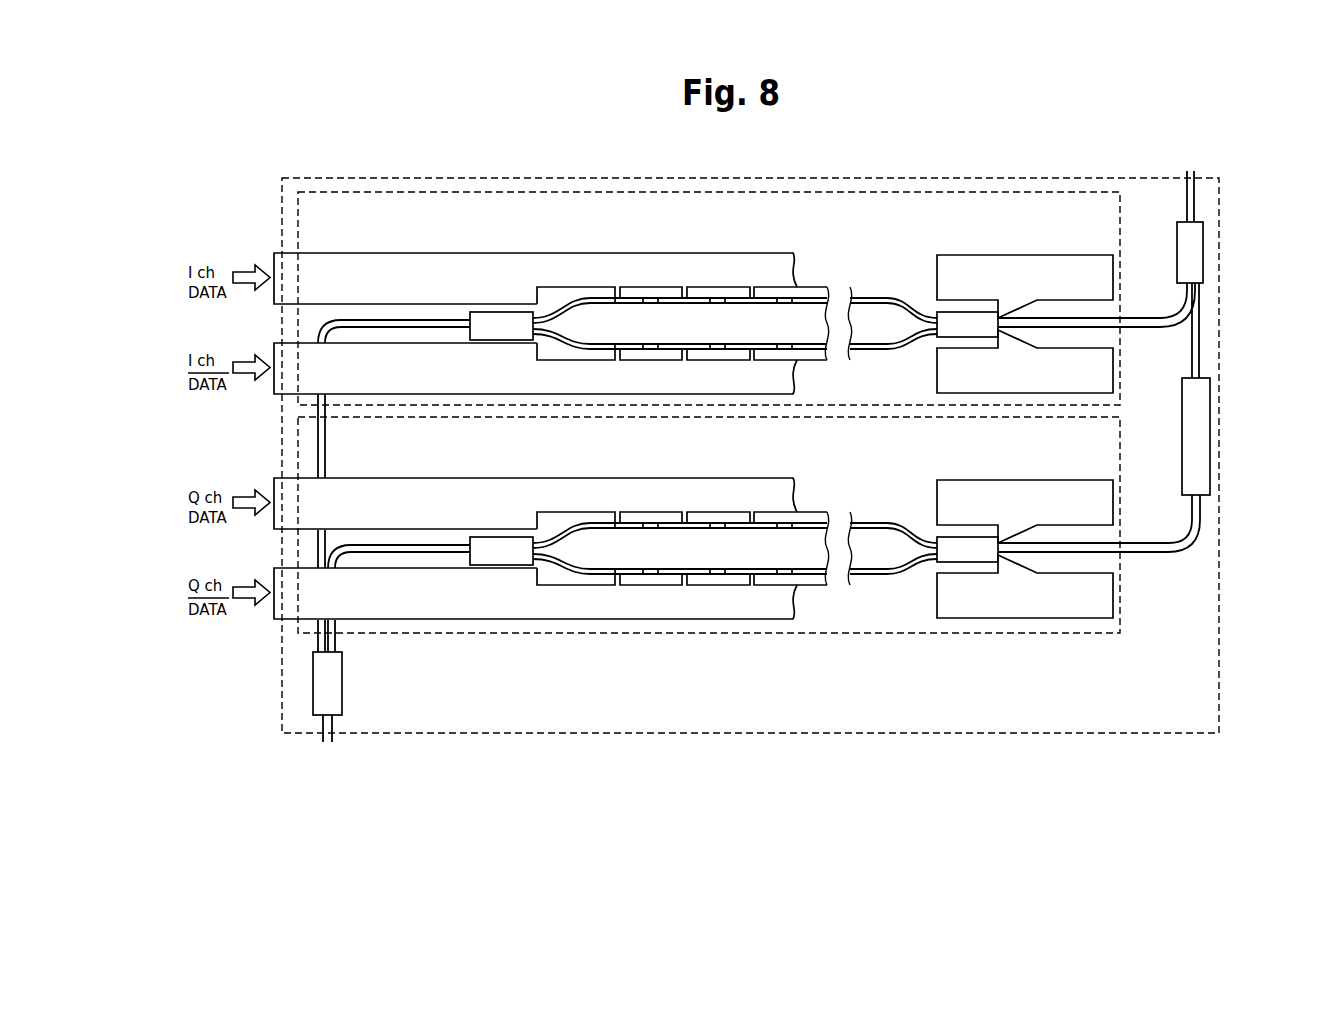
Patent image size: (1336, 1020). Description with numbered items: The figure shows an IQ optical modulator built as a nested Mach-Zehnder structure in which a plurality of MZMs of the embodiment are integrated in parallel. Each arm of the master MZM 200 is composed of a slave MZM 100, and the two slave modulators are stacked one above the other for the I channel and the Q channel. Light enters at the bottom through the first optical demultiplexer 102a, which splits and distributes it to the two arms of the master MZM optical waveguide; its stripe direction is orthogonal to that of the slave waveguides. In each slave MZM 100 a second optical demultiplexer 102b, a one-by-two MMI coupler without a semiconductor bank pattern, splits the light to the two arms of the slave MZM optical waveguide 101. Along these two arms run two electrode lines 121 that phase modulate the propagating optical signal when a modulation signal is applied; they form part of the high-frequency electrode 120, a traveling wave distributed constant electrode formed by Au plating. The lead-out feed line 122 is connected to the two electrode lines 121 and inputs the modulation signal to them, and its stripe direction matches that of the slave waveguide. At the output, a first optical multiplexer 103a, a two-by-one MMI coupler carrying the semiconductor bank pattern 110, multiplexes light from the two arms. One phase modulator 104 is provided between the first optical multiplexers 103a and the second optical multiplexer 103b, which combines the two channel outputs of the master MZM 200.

The slave MZM 100 is at (1122, 344).
The slave MZM optical waveguide 101 is at (911, 300).
The first optical demultiplexer 102a is at (345, 680).
The second optical demultiplexer 102b is at (518, 312).
The first optical multiplexer 103a is at (972, 322).
The second optical multiplexer 103b is at (1180, 240).
The phase modulator 104 is at (1182, 439).
The semiconductor bank pattern 110 is at (1042, 255).
The high-frequency electrode 120 is at (633, 249).
The electrode line 121 is at (618, 300).
The lead-out feed line 122 is at (415, 255).
The master MZM 200 is at (1222, 187).